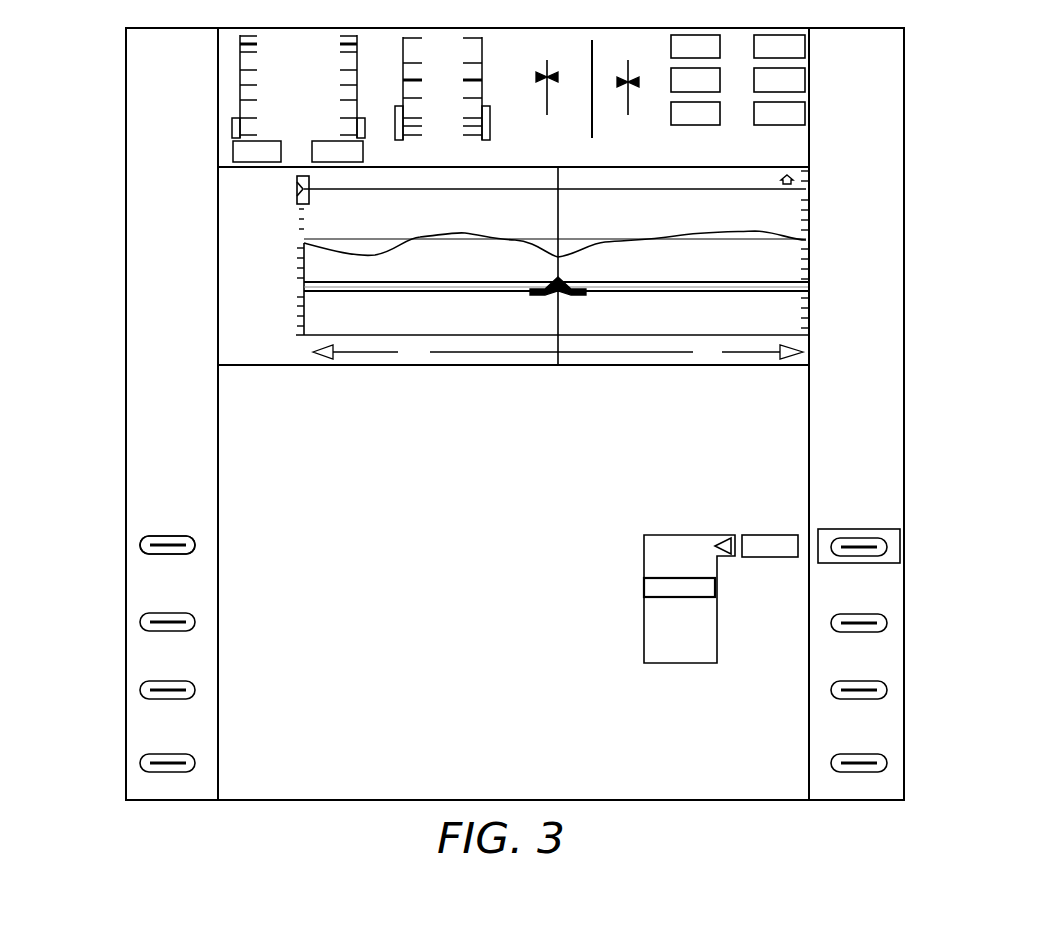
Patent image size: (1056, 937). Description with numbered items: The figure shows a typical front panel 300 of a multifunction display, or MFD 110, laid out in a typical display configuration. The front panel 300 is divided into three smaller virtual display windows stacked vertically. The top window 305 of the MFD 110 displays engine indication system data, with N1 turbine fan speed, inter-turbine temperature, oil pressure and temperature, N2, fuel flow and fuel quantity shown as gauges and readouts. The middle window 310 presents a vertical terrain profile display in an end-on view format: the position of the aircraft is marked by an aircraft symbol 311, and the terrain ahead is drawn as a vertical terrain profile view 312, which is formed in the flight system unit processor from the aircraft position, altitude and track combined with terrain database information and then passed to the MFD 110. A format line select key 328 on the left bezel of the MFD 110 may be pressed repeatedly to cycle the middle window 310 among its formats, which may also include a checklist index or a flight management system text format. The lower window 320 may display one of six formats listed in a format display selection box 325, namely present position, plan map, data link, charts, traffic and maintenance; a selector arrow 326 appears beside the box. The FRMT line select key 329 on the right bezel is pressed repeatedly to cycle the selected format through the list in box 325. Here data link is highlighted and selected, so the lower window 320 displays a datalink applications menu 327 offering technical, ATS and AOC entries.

The multifunction display (MFD) 110 is at (932, 61).
The front panel 300 is at (126, 570).
The top window 305 is at (816, 112).
The middle window 310 is at (824, 262).
The aircraft symbol 311 is at (560, 284).
The vertical terrain profile view 312 is at (748, 235).
The lower window 320 is at (812, 598).
The format display selection box 325 is at (643, 613).
The menu selector arrow 326 is at (723, 538).
The datalink applications menu 327 is at (506, 422).
The format line select key 328 is at (145, 540).
The FRMT line select key 329 is at (900, 530).